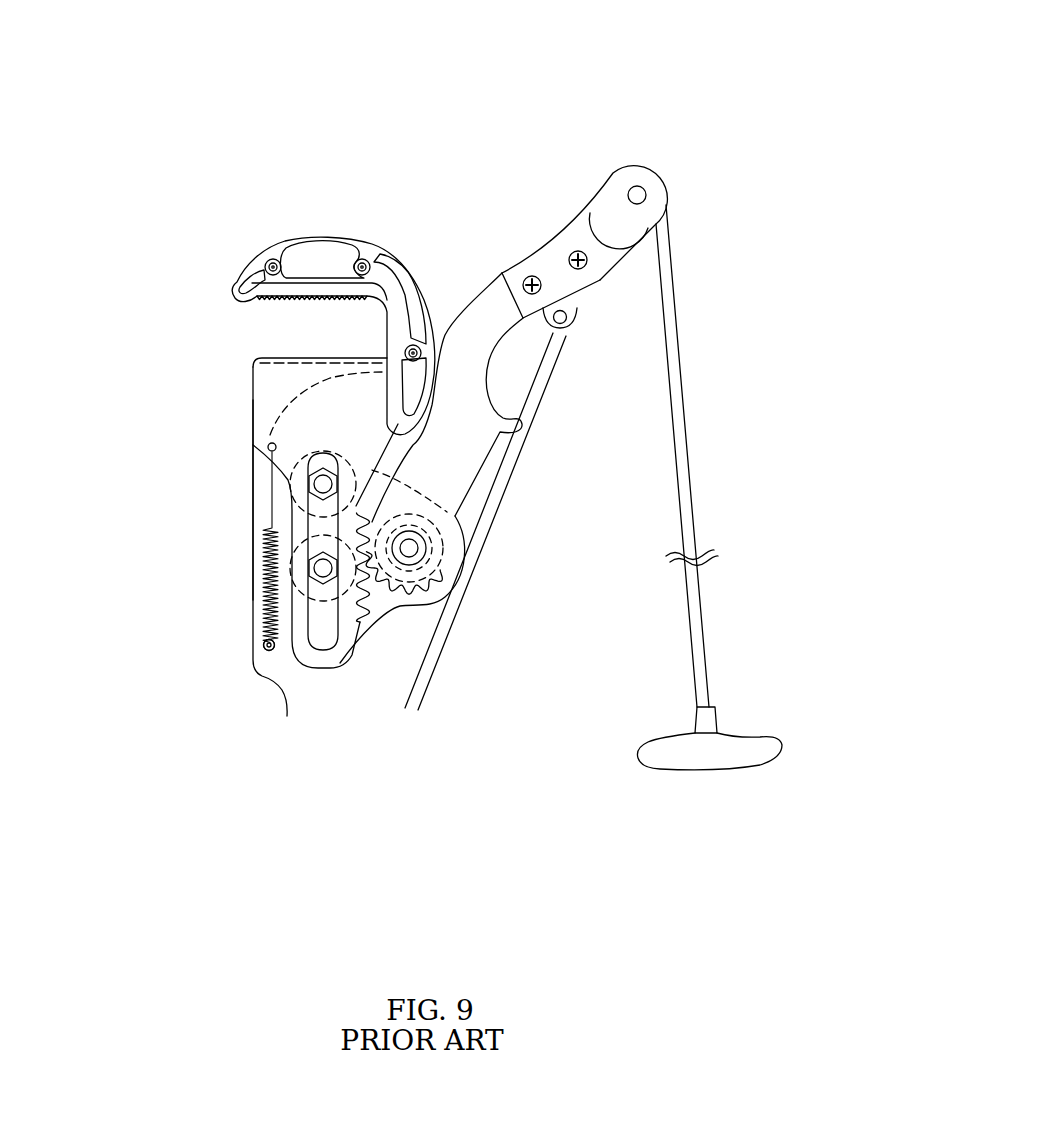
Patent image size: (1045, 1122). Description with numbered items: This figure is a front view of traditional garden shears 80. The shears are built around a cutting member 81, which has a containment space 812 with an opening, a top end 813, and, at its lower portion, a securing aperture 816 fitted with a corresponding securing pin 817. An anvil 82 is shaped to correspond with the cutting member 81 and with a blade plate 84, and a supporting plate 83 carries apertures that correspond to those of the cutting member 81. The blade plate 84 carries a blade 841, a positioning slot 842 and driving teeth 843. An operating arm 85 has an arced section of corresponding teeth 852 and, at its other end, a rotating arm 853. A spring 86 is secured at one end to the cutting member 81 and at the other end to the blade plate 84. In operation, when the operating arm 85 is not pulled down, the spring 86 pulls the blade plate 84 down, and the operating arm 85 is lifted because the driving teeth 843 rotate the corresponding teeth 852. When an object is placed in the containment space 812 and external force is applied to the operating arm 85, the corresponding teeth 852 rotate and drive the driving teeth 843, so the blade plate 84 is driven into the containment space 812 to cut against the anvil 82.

The garden shears 80 is at (650, 153).
The cutting member 81 is at (253, 534).
The containment space 812 is at (290, 318).
The top end 813 is at (365, 256).
The securing aperture 816 is at (264, 645).
The securing pin 817 is at (269, 645).
The anvil 82 is at (270, 242).
The supporting plate 83 is at (380, 515).
The blade plate 84 is at (253, 410).
The blade 841 is at (300, 362).
The positioning slot 842 is at (323, 645).
The driving teeth 843 is at (361, 624).
The operating arm 85 is at (470, 483).
The corresponding teeth 852 is at (425, 597).
The rotating arm 853 is at (497, 311).
The spring 86 is at (264, 608).